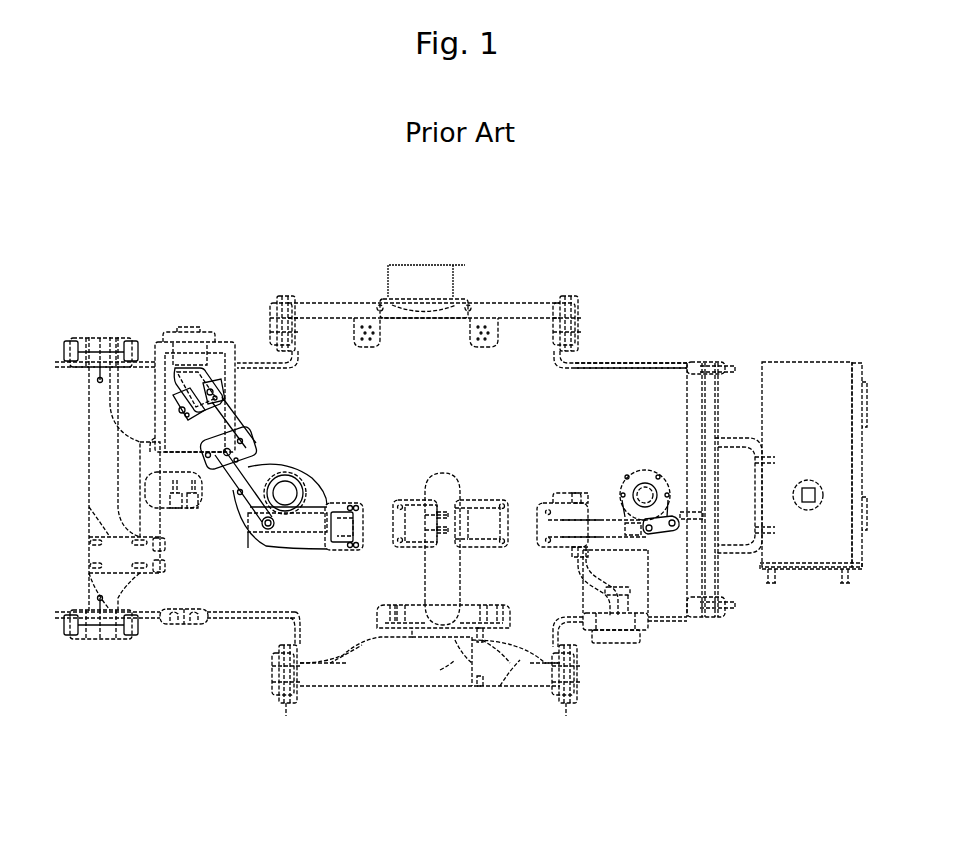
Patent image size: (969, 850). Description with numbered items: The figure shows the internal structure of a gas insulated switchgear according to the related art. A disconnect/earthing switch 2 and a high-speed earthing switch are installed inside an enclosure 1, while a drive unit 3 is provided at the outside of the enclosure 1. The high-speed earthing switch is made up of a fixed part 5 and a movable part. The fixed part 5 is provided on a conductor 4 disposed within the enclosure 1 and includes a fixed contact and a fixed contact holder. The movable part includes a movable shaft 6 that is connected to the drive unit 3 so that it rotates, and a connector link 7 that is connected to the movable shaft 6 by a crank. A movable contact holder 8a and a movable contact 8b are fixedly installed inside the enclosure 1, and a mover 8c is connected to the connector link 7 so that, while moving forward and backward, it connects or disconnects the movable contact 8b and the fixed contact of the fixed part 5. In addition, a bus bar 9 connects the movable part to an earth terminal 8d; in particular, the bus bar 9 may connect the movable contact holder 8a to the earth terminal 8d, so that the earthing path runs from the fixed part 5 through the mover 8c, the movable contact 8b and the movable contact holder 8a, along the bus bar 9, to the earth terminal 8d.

The enclosure 1 is at (632, 362).
The disconnect/earthing switch 2 is at (275, 450).
The drive unit 3 is at (807, 362).
The conductor 4 is at (435, 600).
The fixed part 5 is at (500, 487).
The movable shaft 6 is at (657, 470).
The connector link 7 is at (673, 533).
The movable contact holder 8a is at (573, 487).
The movable contact 8b is at (553, 487).
The mover 8c is at (605, 520).
The earth terminal 8d is at (600, 640).
The bus bar 9 is at (632, 640).